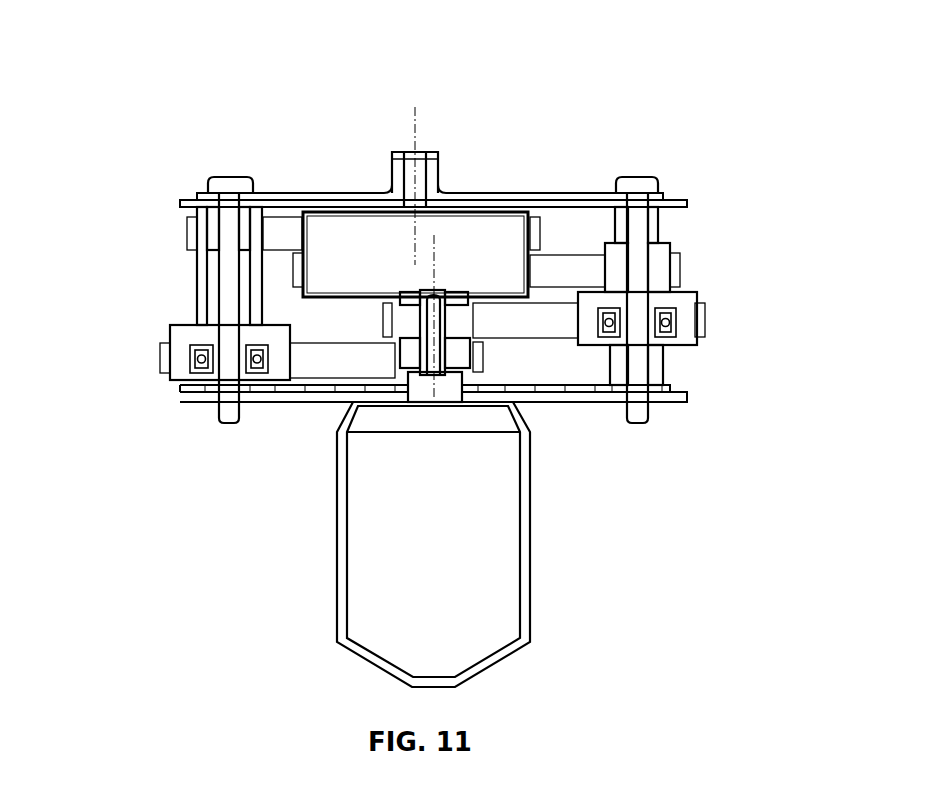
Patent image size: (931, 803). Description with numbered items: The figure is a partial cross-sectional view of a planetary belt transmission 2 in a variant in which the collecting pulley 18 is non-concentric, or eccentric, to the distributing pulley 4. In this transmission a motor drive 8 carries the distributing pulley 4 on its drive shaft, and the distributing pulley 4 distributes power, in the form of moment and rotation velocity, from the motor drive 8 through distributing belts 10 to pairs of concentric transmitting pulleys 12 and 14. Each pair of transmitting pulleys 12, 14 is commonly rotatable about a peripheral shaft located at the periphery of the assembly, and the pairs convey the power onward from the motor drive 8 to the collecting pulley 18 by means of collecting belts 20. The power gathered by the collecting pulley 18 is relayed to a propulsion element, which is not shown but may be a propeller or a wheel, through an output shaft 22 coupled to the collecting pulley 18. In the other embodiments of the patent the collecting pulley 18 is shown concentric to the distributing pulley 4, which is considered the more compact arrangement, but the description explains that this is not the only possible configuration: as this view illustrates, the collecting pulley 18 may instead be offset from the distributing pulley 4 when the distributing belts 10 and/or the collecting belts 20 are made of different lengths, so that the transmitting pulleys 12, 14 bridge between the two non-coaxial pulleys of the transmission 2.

The planetary belt transmission 2 is at (428, 82).
The distributing pulley 4 is at (410, 322).
The motor drive 8 is at (410, 587).
The distributing belts 10 is at (305, 355).
The transmitting pulley 12 is at (183, 338).
The transmitting pulley 14 is at (203, 275).
The collecting pulley 18 is at (352, 232).
The collecting belts 20 is at (190, 228).
The output shaft 22 is at (392, 160).